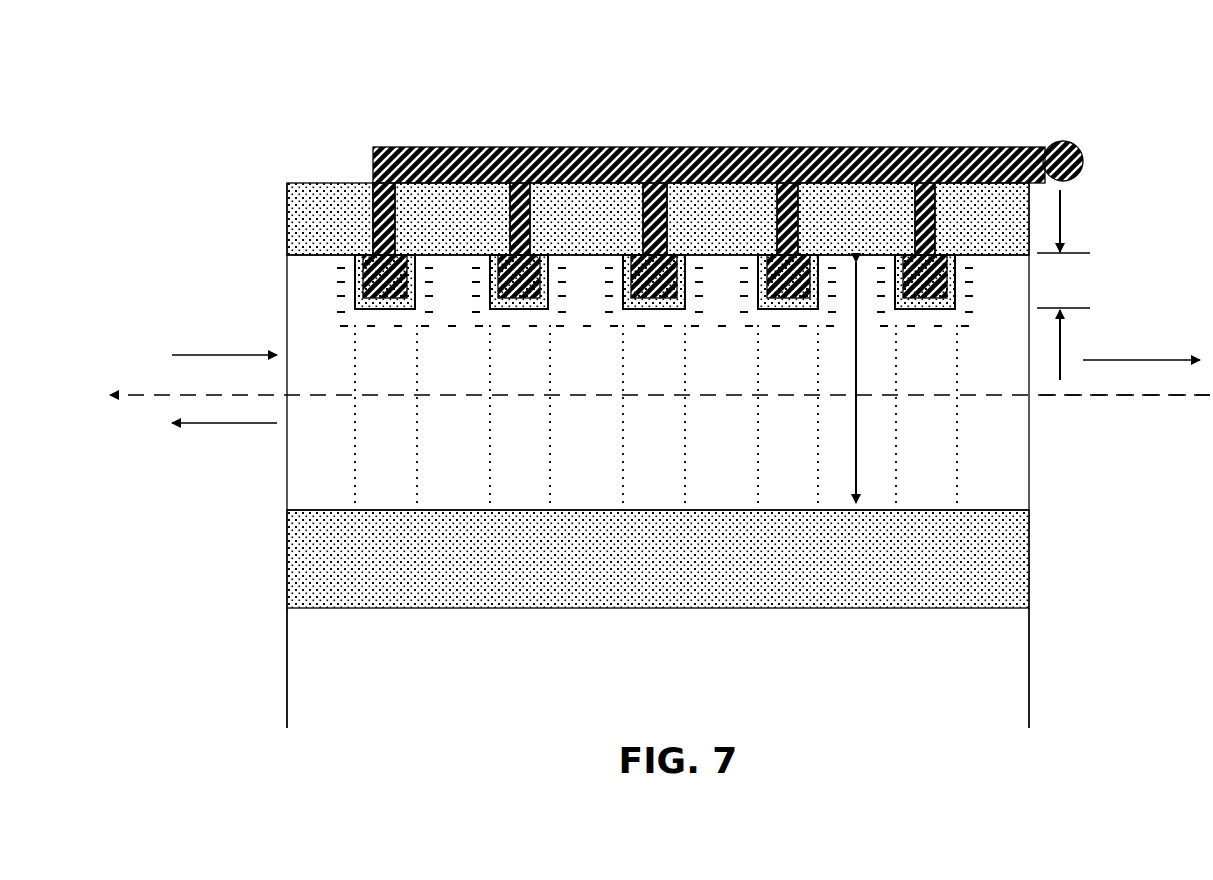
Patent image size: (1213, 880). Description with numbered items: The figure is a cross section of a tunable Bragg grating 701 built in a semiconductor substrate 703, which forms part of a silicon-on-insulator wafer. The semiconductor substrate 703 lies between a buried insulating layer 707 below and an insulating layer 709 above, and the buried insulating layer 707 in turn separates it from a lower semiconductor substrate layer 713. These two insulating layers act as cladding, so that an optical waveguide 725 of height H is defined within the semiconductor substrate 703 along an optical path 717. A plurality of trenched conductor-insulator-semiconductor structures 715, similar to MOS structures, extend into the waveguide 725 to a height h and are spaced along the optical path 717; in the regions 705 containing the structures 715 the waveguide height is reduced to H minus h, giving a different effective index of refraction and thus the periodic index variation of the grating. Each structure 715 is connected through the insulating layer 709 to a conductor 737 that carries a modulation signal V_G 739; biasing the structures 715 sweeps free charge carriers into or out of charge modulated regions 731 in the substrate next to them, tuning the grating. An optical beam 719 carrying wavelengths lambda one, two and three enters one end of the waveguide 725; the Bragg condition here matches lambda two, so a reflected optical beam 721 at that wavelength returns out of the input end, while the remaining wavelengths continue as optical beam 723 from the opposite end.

The tunable Bragg grating 701 is at (1011, 80).
The semiconductor substrate 703 is at (1030, 483).
The regions of waveguide including structures 705 is at (366, 504).
The buried insulating layer 707 is at (1030, 560).
The insulating layer 709 is at (287, 215).
The semiconductor substrate layer 713 is at (1030, 688).
The conductor-insulator-semiconductor structures 715 is at (355, 310).
The optical path 717 is at (140, 380).
The optical beam 719 is at (218, 318).
The reflected optical beam 721 is at (203, 447).
The transmitted optical beam 723 is at (1148, 316).
The optical waveguide 725 is at (1070, 415).
The charge modulated regions 731 is at (356, 328).
The conductor 737 is at (613, 147).
The modulation signal V_G 739 is at (1113, 102).